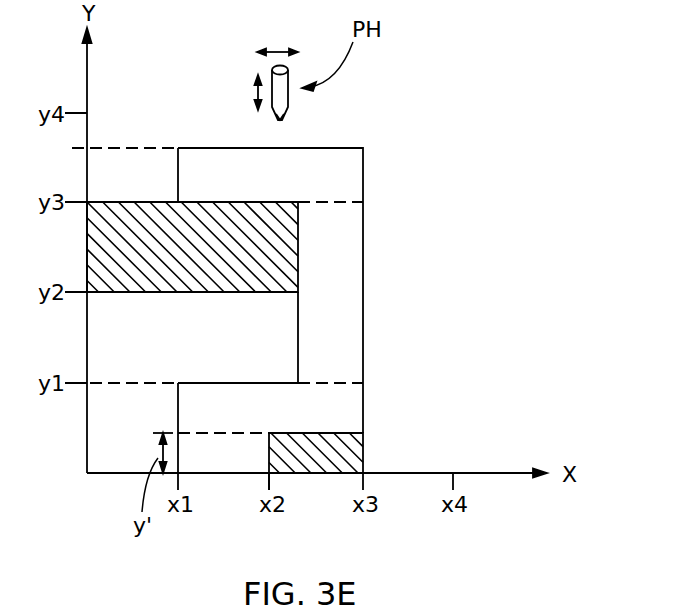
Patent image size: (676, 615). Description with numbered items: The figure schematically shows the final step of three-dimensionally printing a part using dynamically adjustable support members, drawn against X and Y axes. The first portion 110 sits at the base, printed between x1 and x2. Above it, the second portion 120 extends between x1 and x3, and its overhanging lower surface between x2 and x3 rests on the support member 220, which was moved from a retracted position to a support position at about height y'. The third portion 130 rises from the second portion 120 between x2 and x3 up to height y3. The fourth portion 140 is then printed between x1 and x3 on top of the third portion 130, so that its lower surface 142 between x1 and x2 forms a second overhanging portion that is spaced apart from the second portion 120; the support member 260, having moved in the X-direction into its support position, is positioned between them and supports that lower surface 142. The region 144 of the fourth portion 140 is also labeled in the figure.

The first portion 110 is at (230, 468).
The second portion 120 is at (355, 408).
The third portion 130 is at (355, 342).
The fourth portion 140 is at (353, 170).
The lower surface 142 is at (283, 200).
The portion of third layer 144 is at (228, 148).
The support member 220 is at (355, 450).
The support member 260 is at (185, 291).